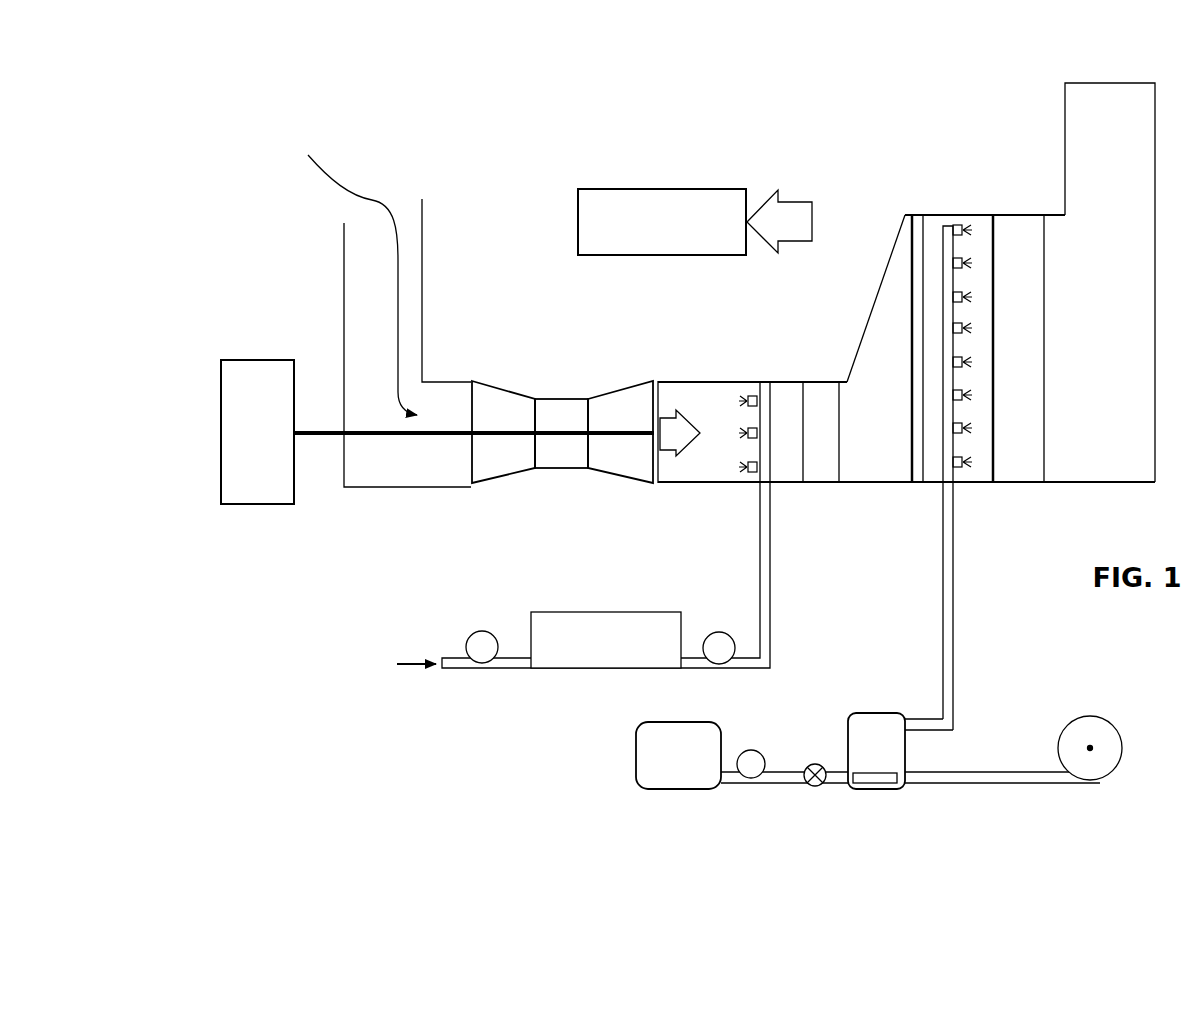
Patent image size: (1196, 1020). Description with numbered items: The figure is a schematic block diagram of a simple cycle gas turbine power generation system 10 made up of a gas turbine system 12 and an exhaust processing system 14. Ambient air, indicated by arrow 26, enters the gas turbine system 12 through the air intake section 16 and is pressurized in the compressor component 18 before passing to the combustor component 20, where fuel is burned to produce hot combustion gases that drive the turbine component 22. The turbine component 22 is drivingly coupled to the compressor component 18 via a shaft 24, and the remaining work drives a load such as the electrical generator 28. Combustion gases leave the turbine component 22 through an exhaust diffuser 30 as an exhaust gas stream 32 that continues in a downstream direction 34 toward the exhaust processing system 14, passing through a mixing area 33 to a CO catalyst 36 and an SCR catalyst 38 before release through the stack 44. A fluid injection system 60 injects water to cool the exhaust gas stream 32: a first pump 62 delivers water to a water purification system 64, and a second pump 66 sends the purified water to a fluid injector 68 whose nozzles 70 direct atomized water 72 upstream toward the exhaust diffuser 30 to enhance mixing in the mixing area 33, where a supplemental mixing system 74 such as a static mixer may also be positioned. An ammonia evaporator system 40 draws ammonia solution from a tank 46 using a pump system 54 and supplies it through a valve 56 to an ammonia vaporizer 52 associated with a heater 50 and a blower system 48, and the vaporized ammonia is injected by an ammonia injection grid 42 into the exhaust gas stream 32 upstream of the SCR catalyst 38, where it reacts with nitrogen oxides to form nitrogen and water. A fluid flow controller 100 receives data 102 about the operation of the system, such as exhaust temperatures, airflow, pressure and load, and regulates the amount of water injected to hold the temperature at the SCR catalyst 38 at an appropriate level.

The simple cycle gas turbine power generation system 10 is at (502, 155).
The gas turbine system 12 is at (562, 398).
The exhaust processing system 14 is at (1001, 288).
The air intake section 16 is at (372, 343).
The compressor component 18 is at (503, 432).
The combustor component 20 is at (561, 433).
The turbine component 22 is at (620, 432).
The shaft 24 is at (474, 467).
The arrow indicating air entry 26 is at (362, 285).
The electrical generator 28 is at (230, 432).
The exhaust diffuser 30 is at (675, 462).
The exhaust gas stream 32 is at (680, 433).
The mixing area 33 is at (782, 432).
The downstream direction 34 is at (805, 502).
The CO catalyst 36 is at (893, 368).
The SCR catalyst 38 is at (1045, 348).
The ammonia evaporator system 40 is at (855, 777).
The ammonia injection grid 42 is at (939, 452).
The stack 44 is at (1110, 272).
The tank 46 is at (642, 763).
The blower system 48 is at (1102, 773).
The heater 50 is at (895, 804).
The ammonia vaporizer 52 is at (855, 739).
The pump system 54 is at (738, 736).
The control valve 56 is at (800, 745).
The fluid injection system 60 is at (572, 523).
The first pump 62 is at (461, 675).
The water purification system 64 is at (586, 666).
The second pump 66 is at (710, 622).
The fluid injector 68 is at (624, 501).
The nozzles 70 is at (746, 399).
The atomized water 72 is at (716, 373).
The supplemental mixing system 74 is at (821, 432).
The fluid flow controller 100 is at (662, 222).
The data 102 is at (793, 207).